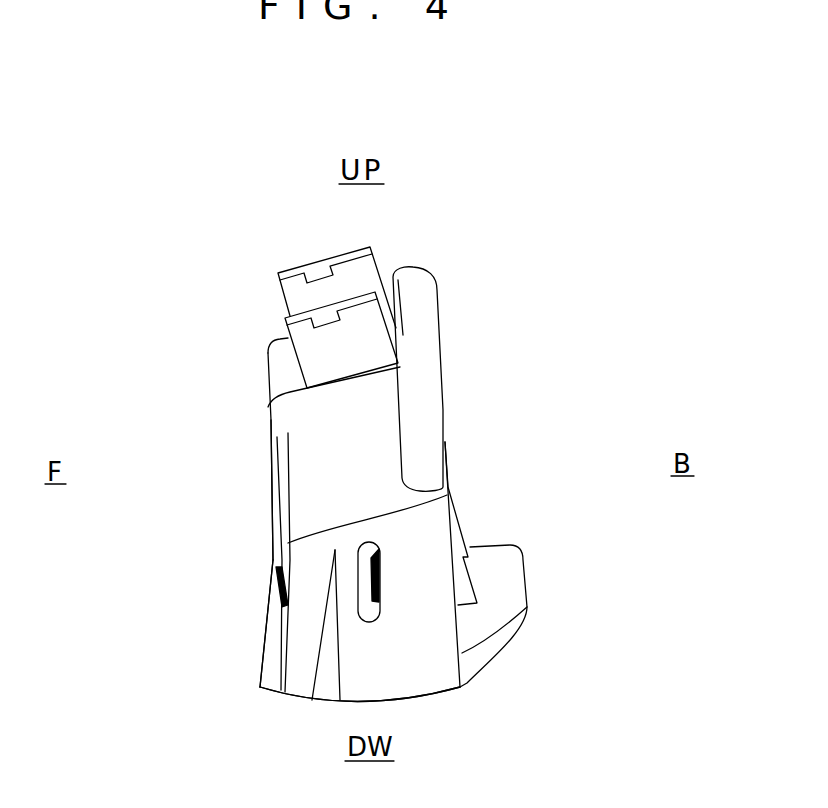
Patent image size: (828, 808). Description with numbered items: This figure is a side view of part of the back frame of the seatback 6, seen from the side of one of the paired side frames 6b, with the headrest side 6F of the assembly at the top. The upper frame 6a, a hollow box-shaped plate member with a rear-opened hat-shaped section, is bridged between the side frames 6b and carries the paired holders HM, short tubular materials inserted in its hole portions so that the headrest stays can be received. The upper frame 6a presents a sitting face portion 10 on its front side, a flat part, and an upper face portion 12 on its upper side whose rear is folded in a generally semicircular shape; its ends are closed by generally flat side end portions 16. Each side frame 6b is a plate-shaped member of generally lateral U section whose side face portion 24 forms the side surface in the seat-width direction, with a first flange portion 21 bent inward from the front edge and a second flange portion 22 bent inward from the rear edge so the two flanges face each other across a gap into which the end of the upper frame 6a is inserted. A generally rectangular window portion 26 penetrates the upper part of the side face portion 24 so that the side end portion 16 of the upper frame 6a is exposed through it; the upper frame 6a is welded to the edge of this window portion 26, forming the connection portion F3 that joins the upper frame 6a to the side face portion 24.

The front portion of glove body 6F is at (442, 243).
The seatback 6 is at (411, 441).
The holders HM is at (283, 290).
The upper face portion 12 is at (398, 328).
The upper frame 6a is at (264, 388).
The sitting face portion 10 is at (272, 422).
The side end portions 16 is at (370, 470).
The side frames 6b is at (458, 500).
The connection portion F3 is at (380, 577).
The window portion 26 is at (360, 564).
The second flange portion 22 is at (457, 590).
The first flange portion 21 is at (280, 650).
The side face portion 24 is at (436, 659).